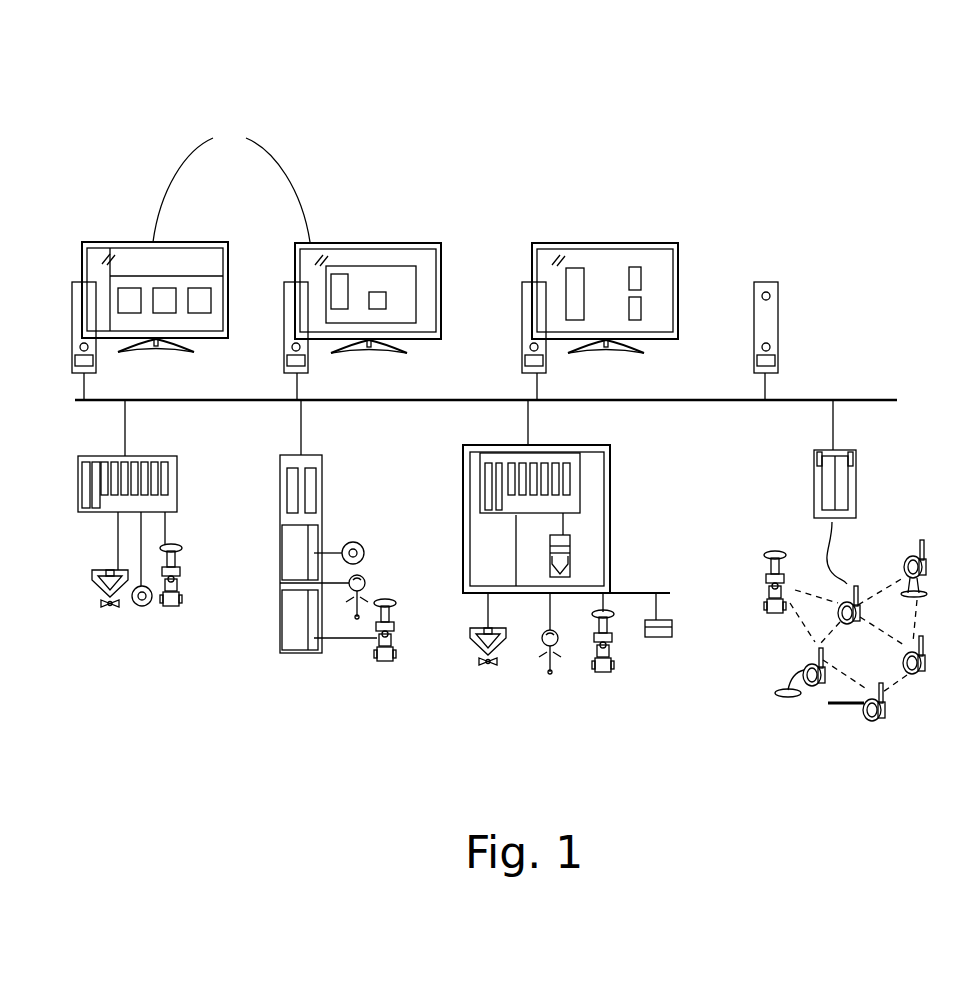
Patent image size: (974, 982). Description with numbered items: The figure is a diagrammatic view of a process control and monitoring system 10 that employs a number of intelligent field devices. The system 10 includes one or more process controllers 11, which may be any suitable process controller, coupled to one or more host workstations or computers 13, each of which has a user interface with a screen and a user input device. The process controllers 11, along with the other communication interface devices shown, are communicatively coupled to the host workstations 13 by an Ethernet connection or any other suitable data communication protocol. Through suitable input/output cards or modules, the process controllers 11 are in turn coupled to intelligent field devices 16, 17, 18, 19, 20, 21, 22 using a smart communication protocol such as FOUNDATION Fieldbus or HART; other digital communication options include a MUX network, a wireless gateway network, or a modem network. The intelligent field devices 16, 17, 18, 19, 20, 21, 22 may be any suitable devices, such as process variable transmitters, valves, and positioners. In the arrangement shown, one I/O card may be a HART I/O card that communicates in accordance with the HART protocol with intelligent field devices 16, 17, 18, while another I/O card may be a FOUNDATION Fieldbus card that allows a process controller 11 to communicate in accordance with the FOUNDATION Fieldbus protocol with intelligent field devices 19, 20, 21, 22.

The process control and monitoring system 10 is at (647, 154).
The process controller 11 is at (86, 512).
The host workstation 13 is at (231, 184).
The intelligent field device 16 is at (110, 612).
The intelligent field device 17 is at (142, 608).
The intelligent field device 18 is at (180, 608).
The intelligent field device 19 is at (478, 652).
The intelligent field device 20 is at (545, 660).
The intelligent field device 21 is at (605, 675).
The intelligent field device 22 is at (668, 637).